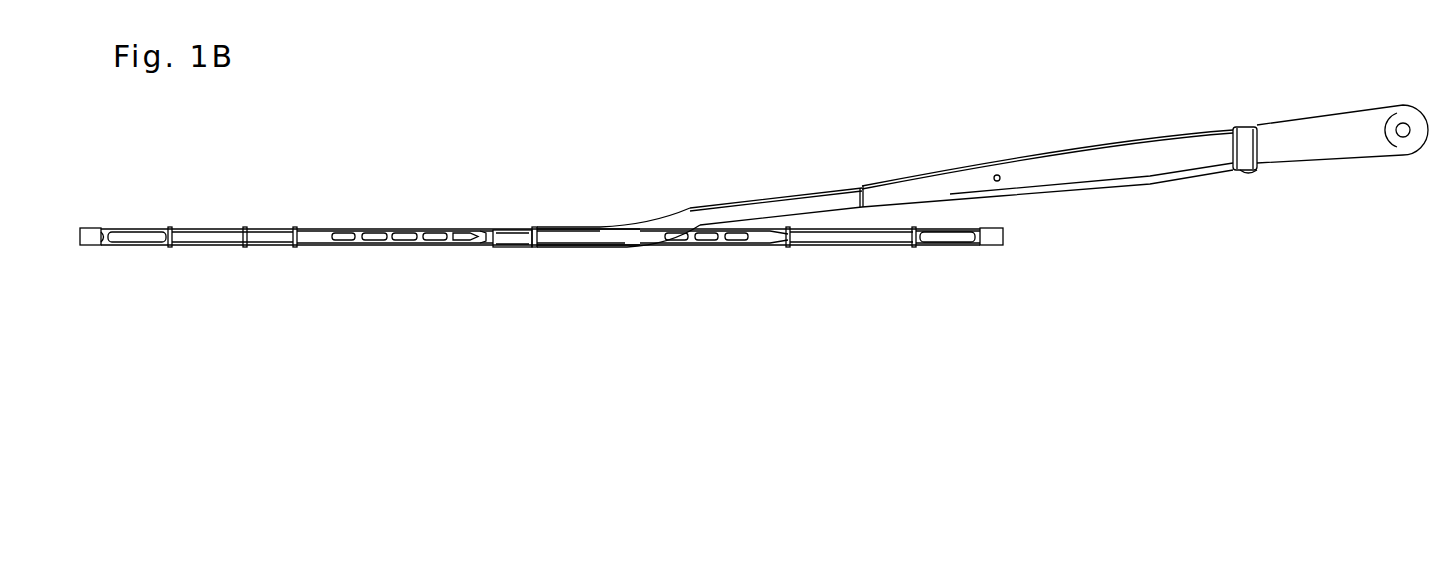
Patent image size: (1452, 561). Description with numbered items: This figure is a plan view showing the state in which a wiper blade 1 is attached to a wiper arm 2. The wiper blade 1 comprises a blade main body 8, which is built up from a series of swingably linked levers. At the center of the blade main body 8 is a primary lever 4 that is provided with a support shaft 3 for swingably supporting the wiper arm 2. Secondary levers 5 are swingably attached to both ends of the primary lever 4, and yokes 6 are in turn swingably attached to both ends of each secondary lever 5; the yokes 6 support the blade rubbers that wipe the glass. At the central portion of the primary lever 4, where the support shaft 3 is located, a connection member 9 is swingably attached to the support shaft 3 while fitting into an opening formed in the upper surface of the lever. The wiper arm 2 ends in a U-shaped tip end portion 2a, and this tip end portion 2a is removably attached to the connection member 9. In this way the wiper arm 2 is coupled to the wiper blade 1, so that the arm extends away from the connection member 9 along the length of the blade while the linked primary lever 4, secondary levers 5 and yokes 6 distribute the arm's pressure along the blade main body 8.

The wiper blade 1 is at (682, 277).
The wiper arm 2 is at (1120, 162).
The U-shaped tip end portion 2a is at (567, 235).
The support shaft 3 is at (541, 250).
The primary lever 4 is at (723, 238).
The secondary lever 5 is at (865, 237).
The yoke 6 is at (935, 237).
The blade main body 8 is at (373, 259).
The connection member 9 is at (515, 235).